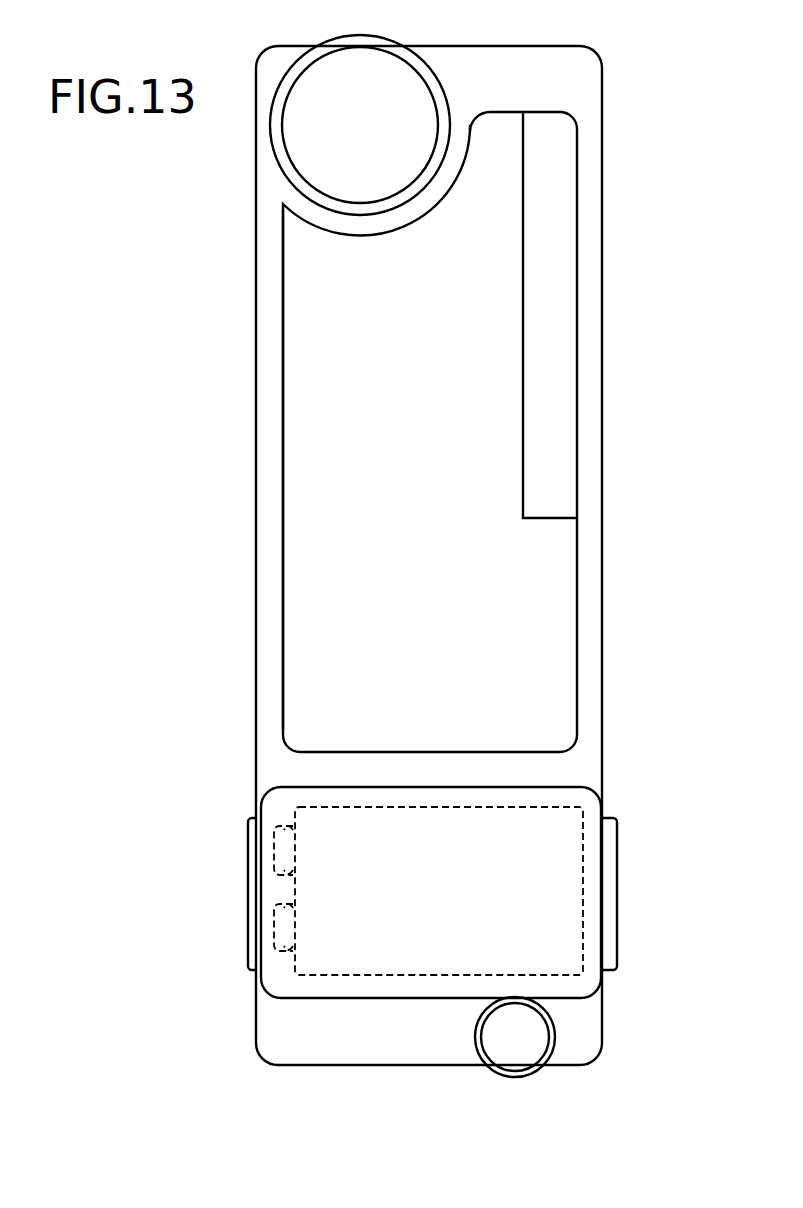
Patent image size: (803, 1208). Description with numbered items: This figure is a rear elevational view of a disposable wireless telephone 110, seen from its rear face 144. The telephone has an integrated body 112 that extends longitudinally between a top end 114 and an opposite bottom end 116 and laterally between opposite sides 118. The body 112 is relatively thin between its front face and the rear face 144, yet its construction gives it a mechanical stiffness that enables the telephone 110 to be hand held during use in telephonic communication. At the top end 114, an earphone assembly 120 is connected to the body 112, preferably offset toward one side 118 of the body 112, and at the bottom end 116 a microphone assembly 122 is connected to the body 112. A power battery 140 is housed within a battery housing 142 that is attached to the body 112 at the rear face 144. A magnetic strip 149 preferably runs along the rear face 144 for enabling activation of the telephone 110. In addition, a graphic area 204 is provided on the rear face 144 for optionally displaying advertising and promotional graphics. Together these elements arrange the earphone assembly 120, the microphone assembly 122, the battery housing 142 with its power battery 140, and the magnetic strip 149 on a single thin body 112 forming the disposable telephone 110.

The disposable wireless telephone 110 is at (427, 557).
The integrated body 112 is at (287, 340).
The top end 114 is at (485, 46).
The bottom end 116 is at (345, 1067).
The sides 118 is at (602, 70).
The earphone assembly 120 is at (382, 37).
The microphone assembly 122 is at (528, 1073).
The power battery 140 is at (308, 810).
The battery housing 142 is at (333, 1000).
The rear face 144 is at (451, 638).
The magnetic strip 149 is at (530, 366).
The graphic area 204 is at (298, 595).